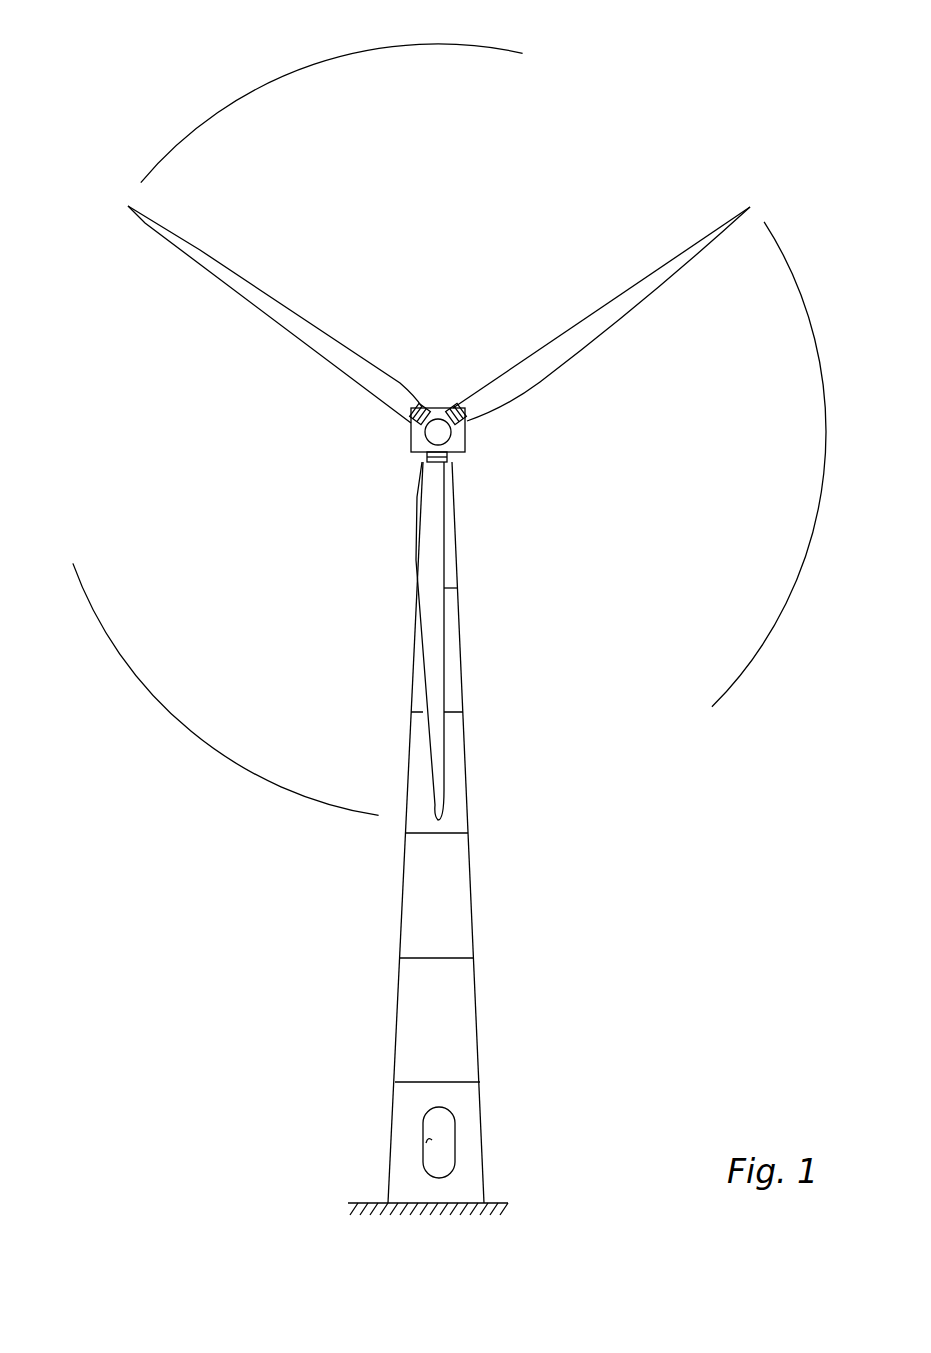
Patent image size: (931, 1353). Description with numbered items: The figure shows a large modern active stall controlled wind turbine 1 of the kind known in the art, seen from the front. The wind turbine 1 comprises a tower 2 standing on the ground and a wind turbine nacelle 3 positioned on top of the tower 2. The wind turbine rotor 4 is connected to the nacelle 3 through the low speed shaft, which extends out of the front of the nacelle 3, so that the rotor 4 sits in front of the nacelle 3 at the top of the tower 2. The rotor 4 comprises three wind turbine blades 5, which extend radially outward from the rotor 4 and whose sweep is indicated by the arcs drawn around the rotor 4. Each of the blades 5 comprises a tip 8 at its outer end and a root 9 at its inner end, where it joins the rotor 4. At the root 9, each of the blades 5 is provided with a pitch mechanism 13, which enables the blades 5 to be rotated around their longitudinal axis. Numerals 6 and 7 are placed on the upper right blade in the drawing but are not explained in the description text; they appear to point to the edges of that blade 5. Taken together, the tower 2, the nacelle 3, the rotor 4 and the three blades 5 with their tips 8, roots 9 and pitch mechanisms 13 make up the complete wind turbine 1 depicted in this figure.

The wind turbine 1 is at (372, 1038).
The tower 2 is at (465, 908).
The nacelle 3 is at (478, 452).
The wind turbine rotor 4 is at (410, 432).
The wind turbine blade 5 is at (438, 675).
The rotor blade 6 is at (551, 342).
The rotor blade 7 is at (547, 380).
The tip 8 is at (128, 206).
The root 9 is at (467, 440).
The pitch mechanism 13 is at (428, 407).